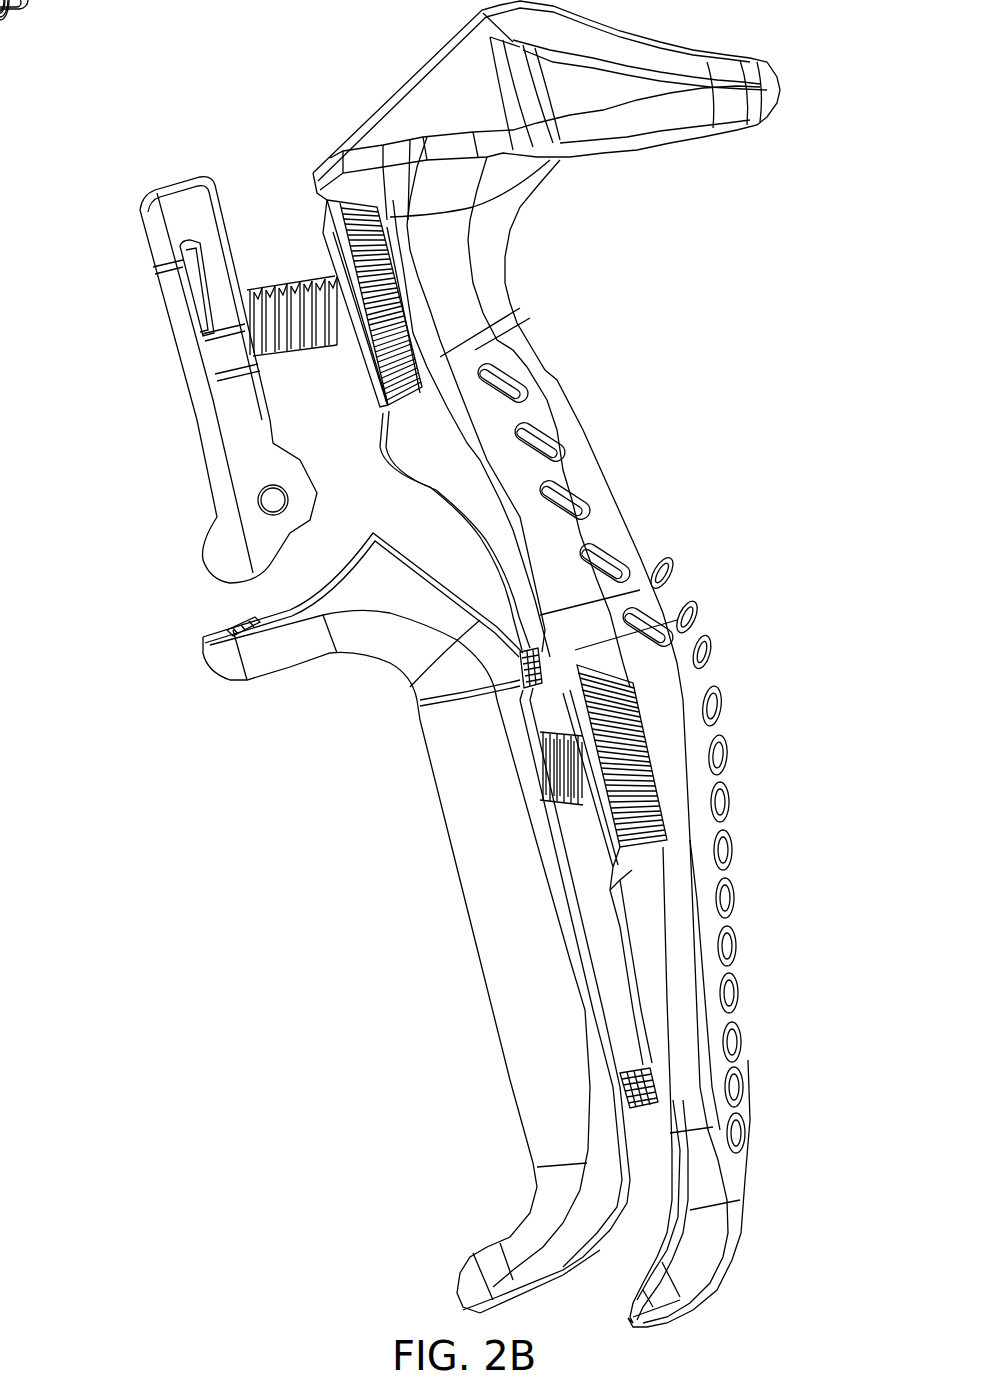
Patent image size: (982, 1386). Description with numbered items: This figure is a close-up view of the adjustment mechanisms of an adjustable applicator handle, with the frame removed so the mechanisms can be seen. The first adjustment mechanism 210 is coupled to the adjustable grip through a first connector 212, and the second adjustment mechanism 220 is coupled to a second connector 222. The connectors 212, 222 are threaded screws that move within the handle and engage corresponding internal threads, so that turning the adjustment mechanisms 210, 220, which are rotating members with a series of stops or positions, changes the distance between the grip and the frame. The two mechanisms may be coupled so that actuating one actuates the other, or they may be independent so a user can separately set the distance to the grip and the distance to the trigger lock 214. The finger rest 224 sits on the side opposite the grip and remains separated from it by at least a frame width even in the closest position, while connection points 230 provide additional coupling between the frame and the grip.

The first adjustment mechanism 210 is at (370, 260).
The first connector 212 is at (302, 278).
The trigger lock 214 is at (190, 277).
The second adjustment mechanism 220 is at (627, 720).
The second connector 222 is at (563, 800).
The finger rest 224 is at (530, 887).
The connection points 230 is at (527, 650).